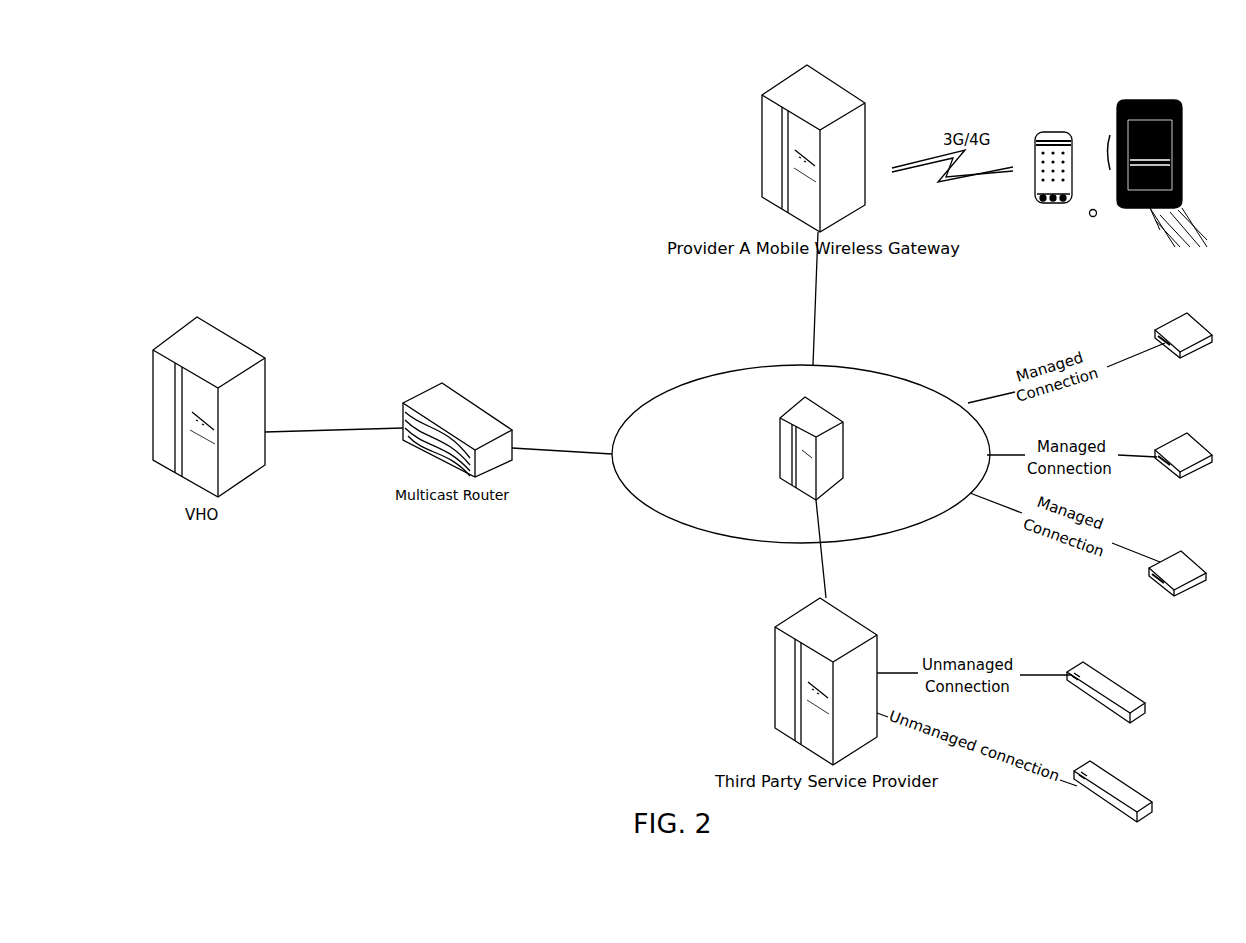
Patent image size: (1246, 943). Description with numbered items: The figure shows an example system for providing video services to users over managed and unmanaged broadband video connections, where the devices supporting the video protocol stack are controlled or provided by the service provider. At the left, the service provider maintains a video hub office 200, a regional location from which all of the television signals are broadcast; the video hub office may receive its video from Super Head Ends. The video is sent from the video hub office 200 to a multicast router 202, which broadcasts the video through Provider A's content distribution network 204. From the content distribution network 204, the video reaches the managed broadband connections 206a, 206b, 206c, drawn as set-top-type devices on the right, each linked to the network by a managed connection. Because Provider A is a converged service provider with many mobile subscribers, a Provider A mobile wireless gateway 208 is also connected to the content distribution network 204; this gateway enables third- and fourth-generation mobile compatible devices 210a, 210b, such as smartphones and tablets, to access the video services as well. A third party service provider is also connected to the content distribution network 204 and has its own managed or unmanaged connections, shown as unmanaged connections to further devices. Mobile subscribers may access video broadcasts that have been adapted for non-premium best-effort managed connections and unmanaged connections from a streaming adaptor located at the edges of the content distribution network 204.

The video hub office (VHO) 200 is at (253, 473).
The multicast router 202 is at (453, 390).
The content distribution network (CDN) 204 is at (688, 528).
The managed broadband connection 206a is at (1107, 367).
The managed broadband connection 206b is at (1118, 457).
The managed broadband connection 206c is at (1138, 555).
The mobile wireless gateway 208 is at (867, 113).
The 3G/4G compatible device 210a is at (1050, 130).
The 3G/4G compatible device 210b is at (1150, 100).